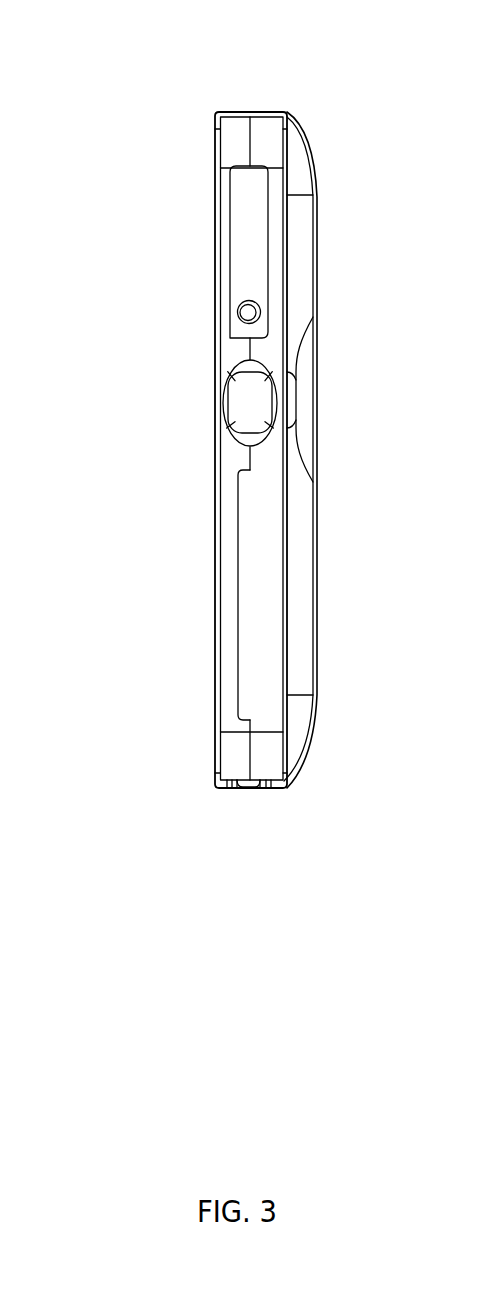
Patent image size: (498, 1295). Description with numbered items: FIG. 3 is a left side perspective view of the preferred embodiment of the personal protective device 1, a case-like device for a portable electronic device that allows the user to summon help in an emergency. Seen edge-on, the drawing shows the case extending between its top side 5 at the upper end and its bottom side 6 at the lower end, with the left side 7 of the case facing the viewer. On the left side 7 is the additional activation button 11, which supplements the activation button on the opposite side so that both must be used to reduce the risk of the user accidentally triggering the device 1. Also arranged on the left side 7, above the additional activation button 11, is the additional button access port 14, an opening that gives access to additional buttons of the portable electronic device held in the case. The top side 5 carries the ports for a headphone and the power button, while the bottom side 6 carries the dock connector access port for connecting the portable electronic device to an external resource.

The personal protective device 1 is at (126, 125).
The top side 5 is at (253, 108).
The bottom side 6 is at (263, 793).
The left side 7 is at (260, 613).
The additional activation button 11 is at (235, 400).
The additional button access port 14 is at (253, 312).